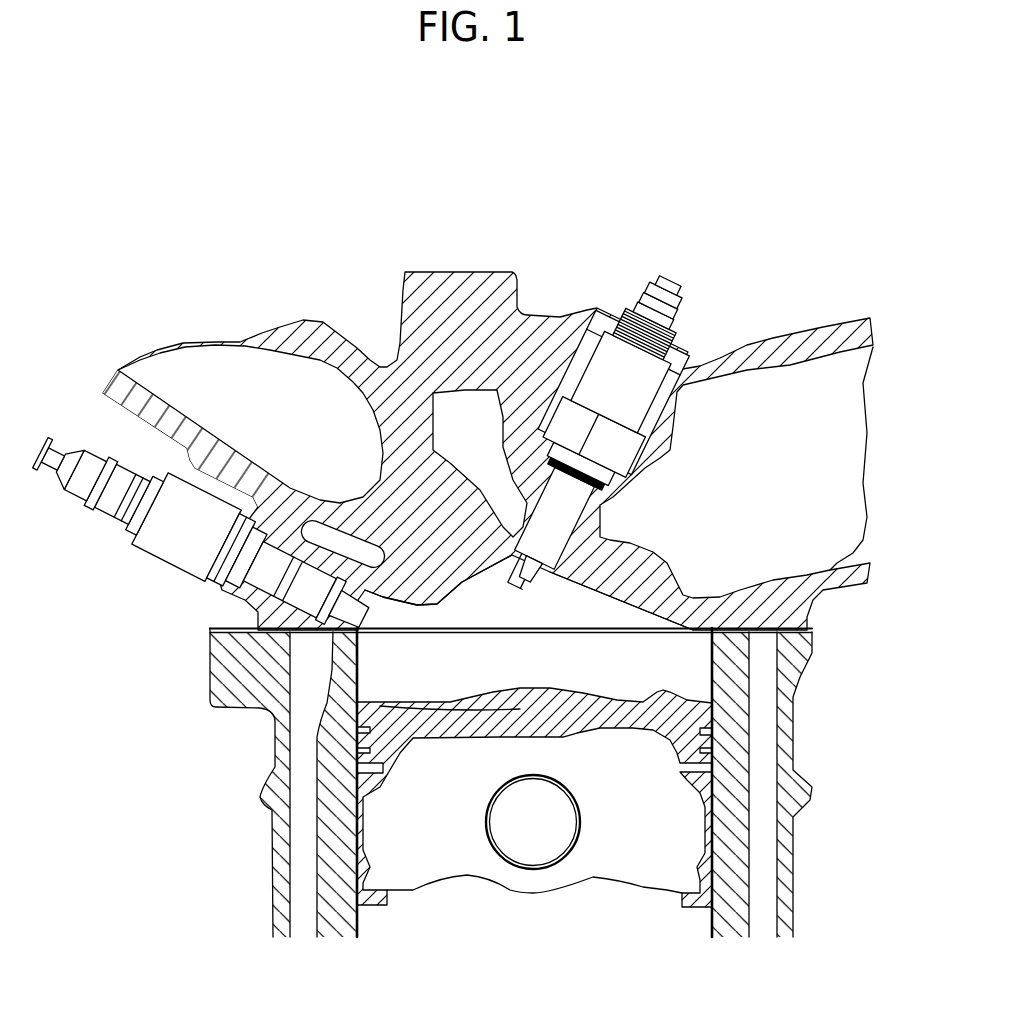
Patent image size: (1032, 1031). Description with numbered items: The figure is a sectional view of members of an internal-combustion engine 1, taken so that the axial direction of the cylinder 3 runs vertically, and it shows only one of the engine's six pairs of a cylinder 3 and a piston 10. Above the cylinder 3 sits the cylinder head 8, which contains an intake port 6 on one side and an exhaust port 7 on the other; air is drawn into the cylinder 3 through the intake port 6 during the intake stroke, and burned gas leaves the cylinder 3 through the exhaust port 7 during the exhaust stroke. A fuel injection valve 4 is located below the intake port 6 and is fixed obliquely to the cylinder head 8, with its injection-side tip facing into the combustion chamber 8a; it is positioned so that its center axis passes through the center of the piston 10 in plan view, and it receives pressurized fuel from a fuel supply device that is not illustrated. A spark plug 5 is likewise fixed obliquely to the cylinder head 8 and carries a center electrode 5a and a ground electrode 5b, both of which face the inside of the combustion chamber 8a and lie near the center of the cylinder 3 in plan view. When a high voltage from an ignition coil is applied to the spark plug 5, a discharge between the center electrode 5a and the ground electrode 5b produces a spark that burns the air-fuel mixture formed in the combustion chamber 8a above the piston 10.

The engine 1 is at (596, 140).
The cylinder 3 is at (710, 930).
The fuel injection valve 4 is at (160, 563).
The spark plug 5 is at (597, 421).
The center electrode 5a is at (533, 575).
The ground electrode 5b is at (515, 586).
The intake port 6 is at (148, 392).
The exhaust port 7 is at (860, 555).
The cylinder head 8 is at (516, 273).
The combustion chamber 8a is at (614, 598).
The piston 10 is at (452, 880).